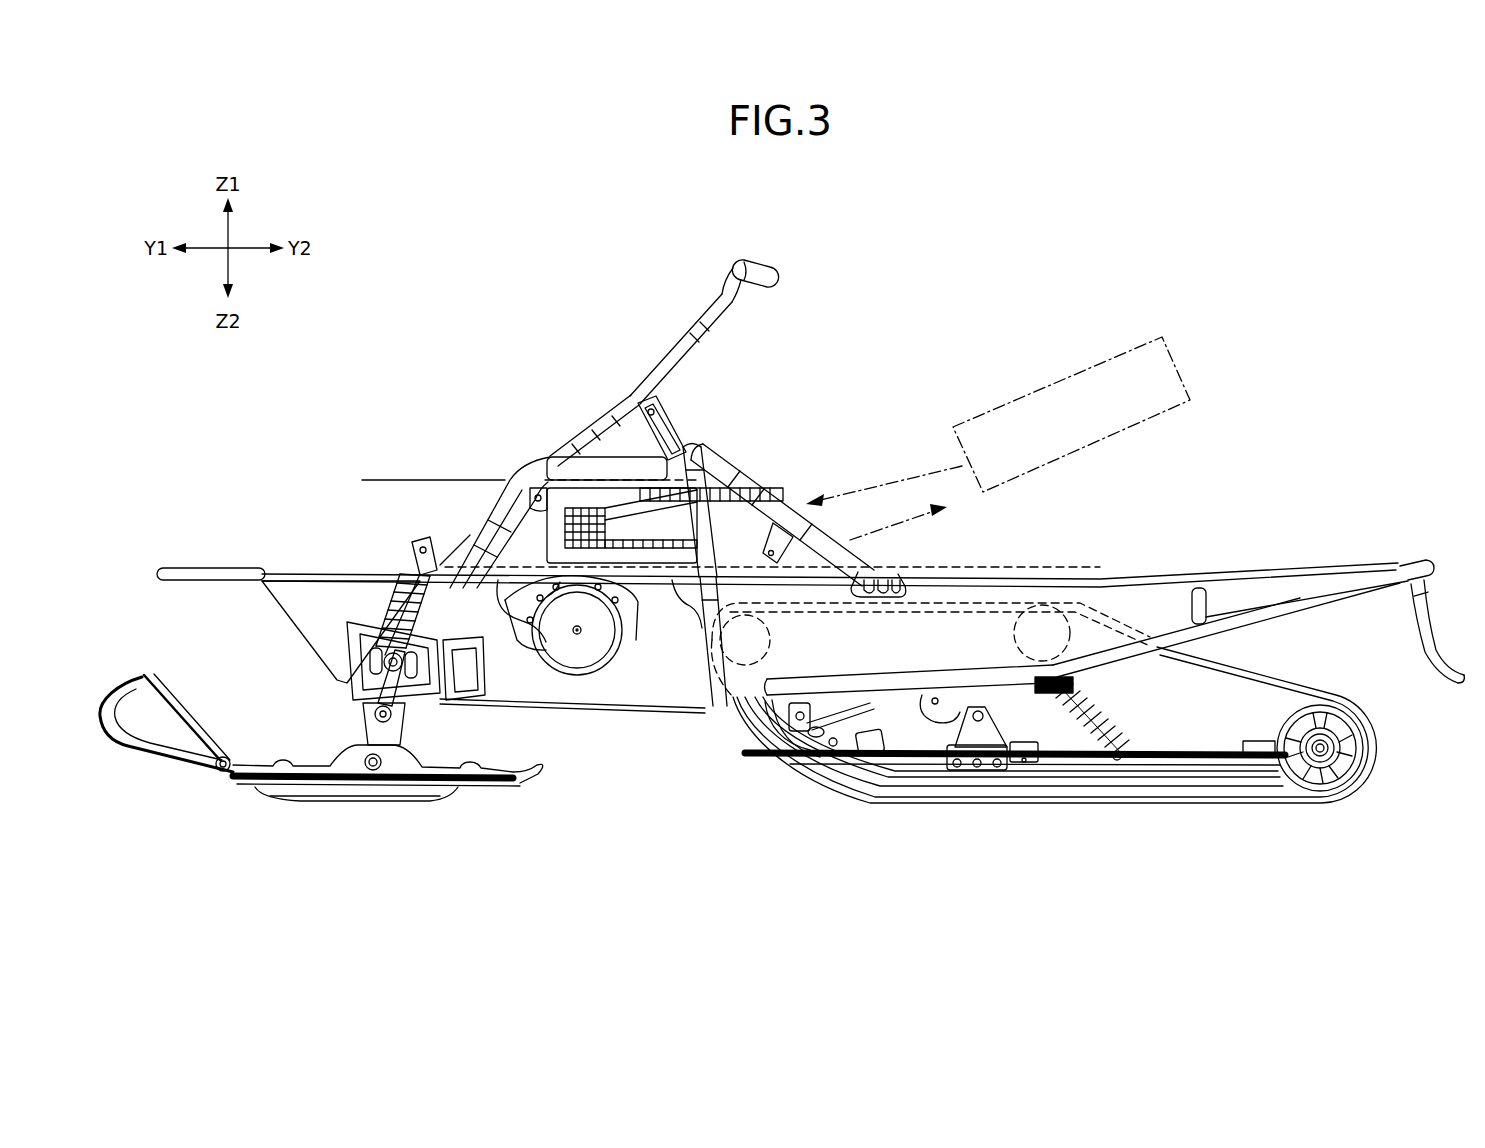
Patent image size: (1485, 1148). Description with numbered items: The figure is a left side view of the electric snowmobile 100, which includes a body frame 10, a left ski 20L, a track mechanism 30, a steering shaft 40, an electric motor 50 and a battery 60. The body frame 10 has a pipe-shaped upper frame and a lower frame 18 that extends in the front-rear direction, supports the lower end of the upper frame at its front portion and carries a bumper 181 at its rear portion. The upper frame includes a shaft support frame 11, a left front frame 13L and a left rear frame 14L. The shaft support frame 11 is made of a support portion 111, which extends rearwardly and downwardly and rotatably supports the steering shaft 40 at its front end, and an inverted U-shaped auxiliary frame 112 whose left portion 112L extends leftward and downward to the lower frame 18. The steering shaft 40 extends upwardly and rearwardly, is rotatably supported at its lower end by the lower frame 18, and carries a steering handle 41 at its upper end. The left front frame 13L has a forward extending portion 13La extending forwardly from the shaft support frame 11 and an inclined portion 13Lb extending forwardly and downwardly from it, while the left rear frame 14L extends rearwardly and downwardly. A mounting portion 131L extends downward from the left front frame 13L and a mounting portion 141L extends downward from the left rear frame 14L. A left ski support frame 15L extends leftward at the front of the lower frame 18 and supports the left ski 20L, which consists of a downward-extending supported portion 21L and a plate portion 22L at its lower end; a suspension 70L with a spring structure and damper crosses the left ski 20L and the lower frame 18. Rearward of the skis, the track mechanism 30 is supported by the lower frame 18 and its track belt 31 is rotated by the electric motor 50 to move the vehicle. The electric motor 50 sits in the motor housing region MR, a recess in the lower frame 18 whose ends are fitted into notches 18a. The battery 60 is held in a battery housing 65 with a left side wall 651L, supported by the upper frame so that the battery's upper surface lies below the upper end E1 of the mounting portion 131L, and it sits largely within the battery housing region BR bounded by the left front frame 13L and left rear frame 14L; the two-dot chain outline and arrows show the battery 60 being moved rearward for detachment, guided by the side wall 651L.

The body frame 10 is at (781, 424).
The shaft support frame 11 is at (700, 430).
The support portion 111 is at (664, 408).
The auxiliary frame 112 is at (696, 458).
The left portion 112L is at (712, 648).
The left front frame 13L is at (484, 513).
The forward extending portion 13La is at (576, 455).
The inclined portion 13Lb is at (463, 547).
The mounting portion 131L is at (534, 490).
The left rear frame 14L is at (794, 498).
The mounting portion 141L is at (800, 532).
The left ski support frame 15L is at (358, 650).
The lower frame 18 is at (1119, 566).
The bumper 181 is at (1410, 560).
The notch 18a is at (550, 657).
The left ski 20L is at (143, 752).
The supported portion 21L is at (374, 727).
The plate portion 22L is at (348, 802).
The track mechanism 30 is at (1040, 812).
The track belt 31 is at (1377, 757).
The steering shaft 40 is at (668, 346).
The steering handle 41 is at (746, 262).
The electric motor 50 is at (597, 648).
The battery 60 is at (1081, 366).
The battery housing 65 is at (652, 565).
The left side wall 651L is at (670, 568).
The suspension 70L is at (394, 610).
The snowmobile 100 is at (1176, 328).
The battery housing region BR is at (862, 560).
The upper end E1 is at (515, 480).
The motor housing region MR is at (583, 668).